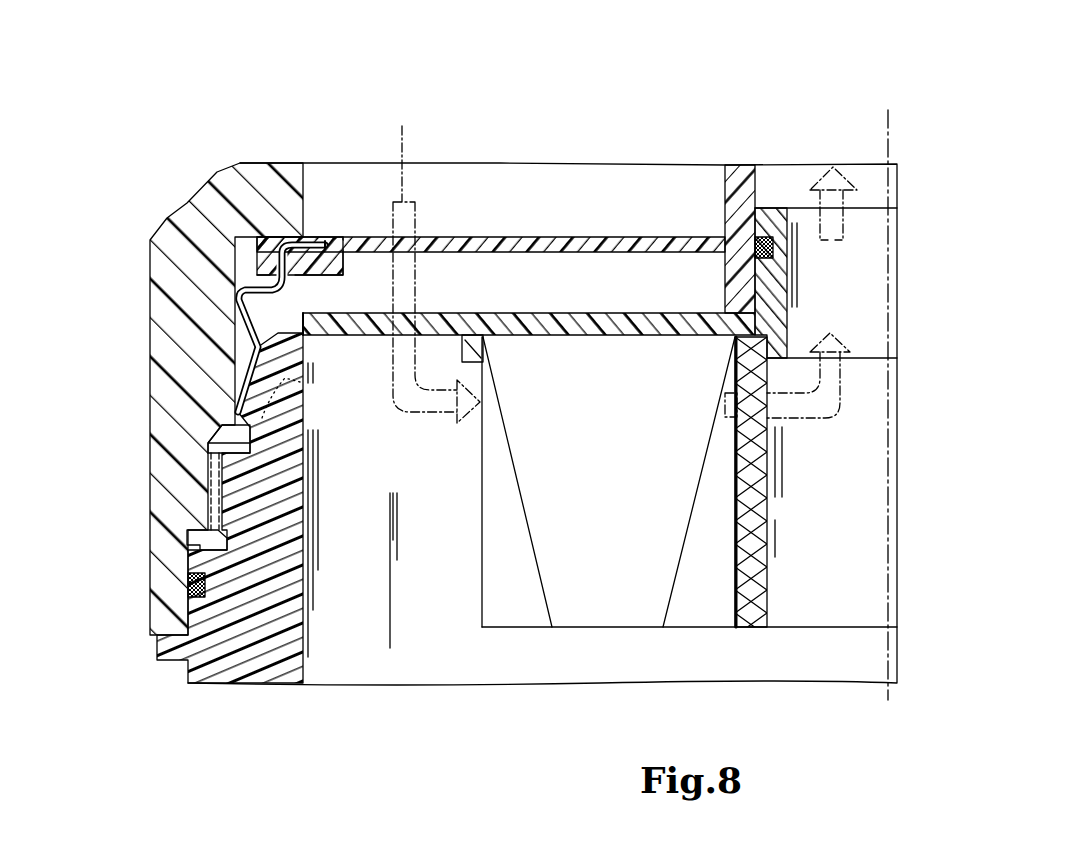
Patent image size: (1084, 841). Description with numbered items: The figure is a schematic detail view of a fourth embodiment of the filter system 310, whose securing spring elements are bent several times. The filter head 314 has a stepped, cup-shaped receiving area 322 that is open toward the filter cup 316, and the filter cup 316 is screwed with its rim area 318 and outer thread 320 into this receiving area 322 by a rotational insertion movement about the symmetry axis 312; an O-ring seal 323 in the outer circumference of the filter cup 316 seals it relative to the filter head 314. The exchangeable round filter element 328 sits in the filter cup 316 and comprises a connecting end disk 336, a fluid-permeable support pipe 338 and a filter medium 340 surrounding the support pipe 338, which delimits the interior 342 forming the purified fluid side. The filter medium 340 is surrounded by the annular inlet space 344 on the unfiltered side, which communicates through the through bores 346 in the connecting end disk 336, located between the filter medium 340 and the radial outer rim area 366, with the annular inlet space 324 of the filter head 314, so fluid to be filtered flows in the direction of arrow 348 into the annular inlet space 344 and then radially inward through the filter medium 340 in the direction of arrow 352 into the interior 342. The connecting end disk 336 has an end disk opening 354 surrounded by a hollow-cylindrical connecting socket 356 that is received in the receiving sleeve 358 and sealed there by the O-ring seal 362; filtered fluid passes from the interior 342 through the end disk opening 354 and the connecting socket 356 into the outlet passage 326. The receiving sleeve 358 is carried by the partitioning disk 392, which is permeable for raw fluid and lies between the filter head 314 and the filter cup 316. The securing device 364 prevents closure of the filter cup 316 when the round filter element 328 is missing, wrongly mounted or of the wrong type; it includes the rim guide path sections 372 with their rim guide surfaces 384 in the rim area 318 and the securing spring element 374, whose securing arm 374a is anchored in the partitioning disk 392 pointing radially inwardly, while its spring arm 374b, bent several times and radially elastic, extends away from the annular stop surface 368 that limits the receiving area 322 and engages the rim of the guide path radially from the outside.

The filter system 310 is at (562, 63).
The symmetry axis 312 is at (888, 152).
The filter head 314 is at (167, 215).
The filter cup 316 is at (250, 635).
The rim area 318 is at (314, 403).
The outer thread 320 is at (203, 484).
The receiving area 322 is at (178, 538).
The O-ring seal 323 is at (188, 585).
The annular inlet space 324 is at (540, 212).
The outlet passage 326 is at (810, 183).
The round filter element 328 is at (781, 592).
The connecting end disk 336 is at (577, 311).
The support pipe 338 is at (755, 608).
The filter medium 340 is at (617, 615).
The interior 342 is at (845, 502).
The annular inlet space 344 is at (455, 515).
The through bores 346 is at (452, 327).
The arrow 348 is at (432, 261).
The arrow 352 is at (822, 392).
The end disk opening 354 is at (850, 307).
The connecting socket 356 is at (777, 215).
The receiving sleeve 358 is at (735, 185).
The O-ring seal 362 is at (773, 248).
The securing device 364 is at (240, 358).
The radial outer rim area 366 is at (315, 346).
The annular stop surface 368 is at (257, 233).
The rim guide path sections 372 is at (302, 310).
The securing spring element 374 is at (226, 299).
The securing arm 374a is at (327, 241).
The spring arm 374b is at (240, 390).
The rim guide surfaces 384 is at (283, 327).
The partitioning disk 392 is at (623, 250).